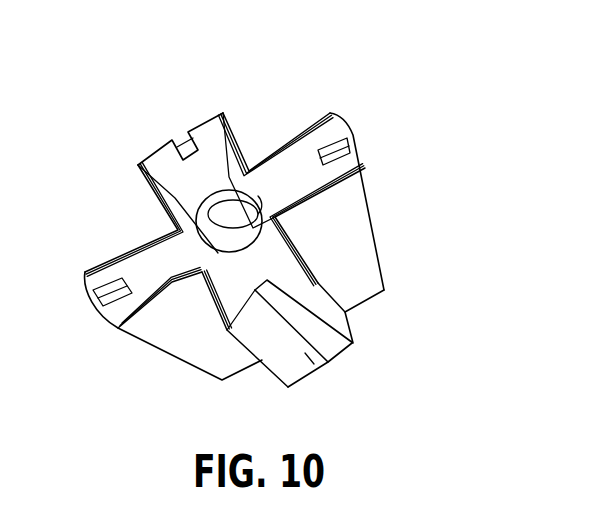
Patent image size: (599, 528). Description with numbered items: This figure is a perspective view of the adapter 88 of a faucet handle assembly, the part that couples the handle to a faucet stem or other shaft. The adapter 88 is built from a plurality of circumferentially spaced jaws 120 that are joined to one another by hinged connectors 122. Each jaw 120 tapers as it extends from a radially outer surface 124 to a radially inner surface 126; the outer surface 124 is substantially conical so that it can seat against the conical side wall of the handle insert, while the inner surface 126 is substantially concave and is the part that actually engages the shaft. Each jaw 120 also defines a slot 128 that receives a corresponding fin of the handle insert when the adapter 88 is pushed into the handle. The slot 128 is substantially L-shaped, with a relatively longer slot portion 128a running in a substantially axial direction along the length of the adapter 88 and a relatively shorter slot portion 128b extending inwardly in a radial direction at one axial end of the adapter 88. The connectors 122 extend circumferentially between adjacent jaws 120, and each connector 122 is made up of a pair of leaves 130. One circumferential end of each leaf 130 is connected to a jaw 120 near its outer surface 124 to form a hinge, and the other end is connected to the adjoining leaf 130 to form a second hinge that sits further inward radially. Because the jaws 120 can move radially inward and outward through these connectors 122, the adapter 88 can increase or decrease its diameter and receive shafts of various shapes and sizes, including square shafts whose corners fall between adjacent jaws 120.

The adapter 88 is at (156, 101).
The jaw 120 is at (281, 172).
The hinged connector 122 is at (185, 340).
The radially outer surface 124 is at (358, 146).
The radially inner surface 126 is at (227, 222).
The slot 128 is at (94, 303).
The longer slot portion 128a is at (310, 360).
The shorter slot portion 128b is at (257, 306).
The leaf 130 is at (313, 275).